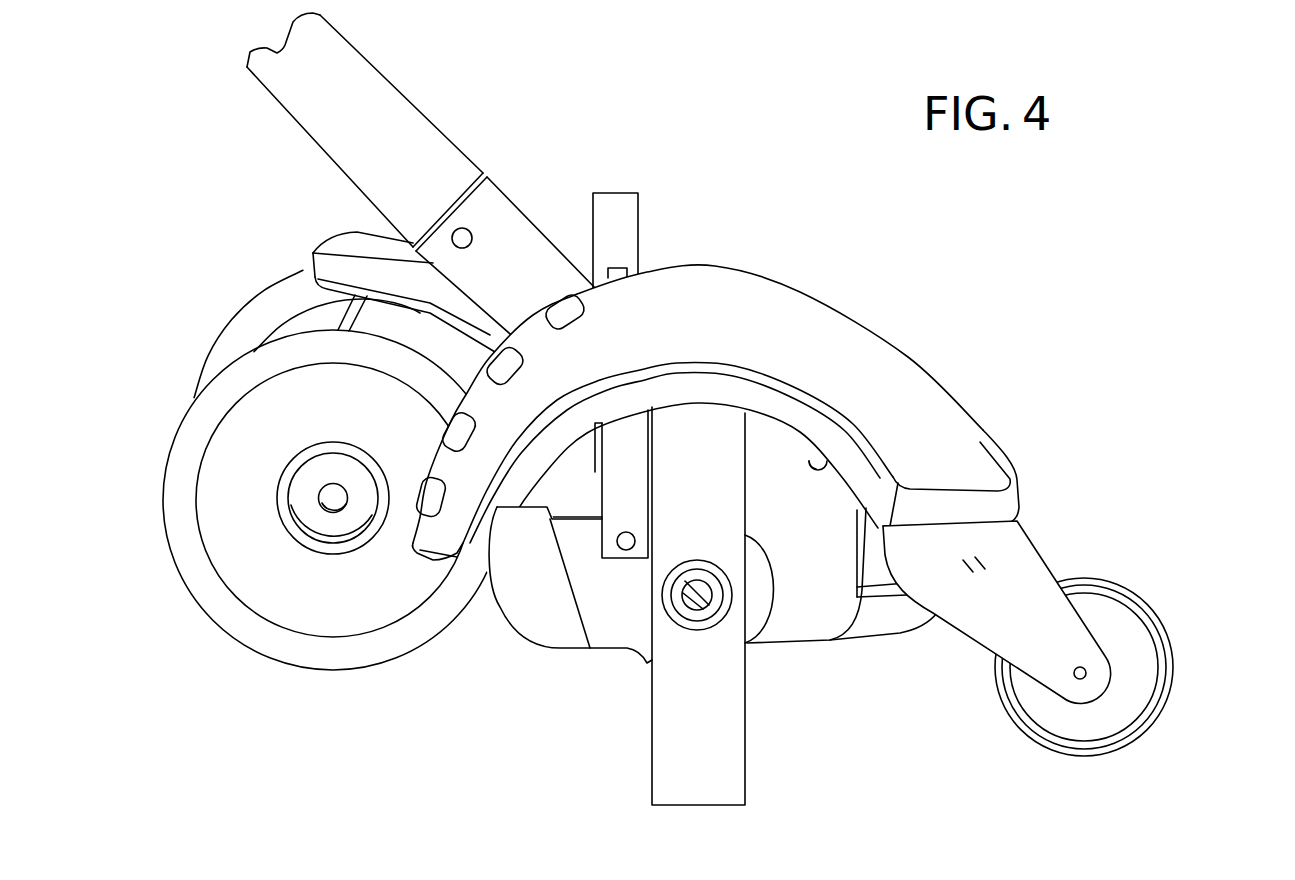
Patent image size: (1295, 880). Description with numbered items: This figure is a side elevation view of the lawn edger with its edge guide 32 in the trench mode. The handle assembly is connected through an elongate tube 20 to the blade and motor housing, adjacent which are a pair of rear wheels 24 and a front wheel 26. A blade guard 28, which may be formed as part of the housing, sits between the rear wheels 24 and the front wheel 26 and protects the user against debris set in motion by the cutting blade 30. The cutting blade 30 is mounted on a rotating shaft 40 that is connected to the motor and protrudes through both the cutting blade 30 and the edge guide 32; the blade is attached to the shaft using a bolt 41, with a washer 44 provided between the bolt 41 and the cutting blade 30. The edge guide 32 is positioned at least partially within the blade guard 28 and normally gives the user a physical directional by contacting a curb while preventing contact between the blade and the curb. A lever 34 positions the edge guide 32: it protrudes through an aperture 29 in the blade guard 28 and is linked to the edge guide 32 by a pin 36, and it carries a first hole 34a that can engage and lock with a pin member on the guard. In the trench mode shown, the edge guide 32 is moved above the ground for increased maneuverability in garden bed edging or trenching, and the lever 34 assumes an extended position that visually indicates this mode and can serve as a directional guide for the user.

The elongate tube 20 is at (393, 83).
The rear wheels 24 is at (183, 583).
The front wheel 26 is at (1173, 655).
The blade guard 28 is at (908, 357).
The aperture 29 is at (595, 427).
The cutting blade 30 is at (710, 805).
The edge guide 32 is at (500, 603).
The lever 34 is at (638, 217).
The first hole 34a is at (636, 252).
The pin 36 is at (626, 550).
The rotating shaft 40 is at (690, 620).
The bolt 41 is at (680, 628).
The washer 44 is at (697, 610).